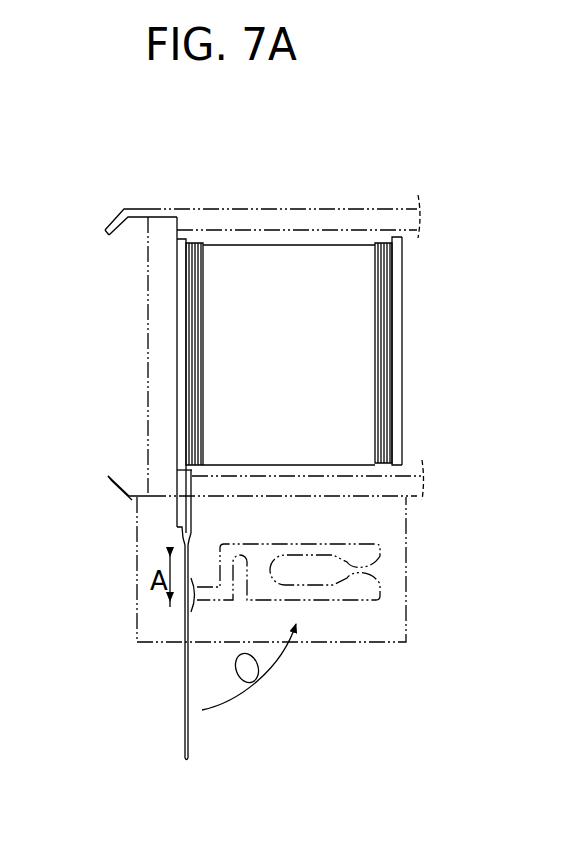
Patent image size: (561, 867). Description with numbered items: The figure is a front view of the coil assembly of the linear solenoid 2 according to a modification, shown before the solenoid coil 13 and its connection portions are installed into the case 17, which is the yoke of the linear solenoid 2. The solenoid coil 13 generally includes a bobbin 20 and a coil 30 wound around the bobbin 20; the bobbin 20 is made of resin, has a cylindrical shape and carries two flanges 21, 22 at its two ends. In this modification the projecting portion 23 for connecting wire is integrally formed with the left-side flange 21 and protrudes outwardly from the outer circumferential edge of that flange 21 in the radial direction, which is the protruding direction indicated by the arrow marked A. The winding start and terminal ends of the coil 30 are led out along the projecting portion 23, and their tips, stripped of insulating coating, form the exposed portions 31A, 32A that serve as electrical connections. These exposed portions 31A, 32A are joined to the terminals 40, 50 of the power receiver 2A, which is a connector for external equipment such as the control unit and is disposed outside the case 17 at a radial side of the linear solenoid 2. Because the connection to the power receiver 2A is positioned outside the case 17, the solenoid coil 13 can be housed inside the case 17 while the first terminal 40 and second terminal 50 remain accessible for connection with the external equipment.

The linear solenoid 2 is at (172, 202).
The yoke (case) 17 is at (235, 209).
The solenoid coil 13 is at (360, 296).
The coil 30 is at (381, 241).
The bobbin 20 is at (387, 315).
The flange 21 is at (178, 426).
The flange 22 is at (402, 418).
The projecting portion 23 is at (178, 505).
The exposed portion 31A is at (115, 568).
The exposed portion 32A is at (174, 536).
The power receiver 2A is at (167, 674).
The first terminal 40 is at (232, 680).
The second terminal 50 is at (186, 760).